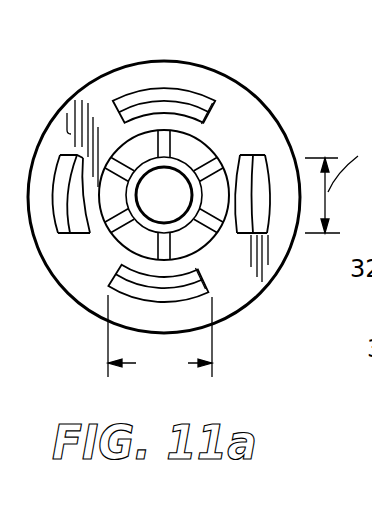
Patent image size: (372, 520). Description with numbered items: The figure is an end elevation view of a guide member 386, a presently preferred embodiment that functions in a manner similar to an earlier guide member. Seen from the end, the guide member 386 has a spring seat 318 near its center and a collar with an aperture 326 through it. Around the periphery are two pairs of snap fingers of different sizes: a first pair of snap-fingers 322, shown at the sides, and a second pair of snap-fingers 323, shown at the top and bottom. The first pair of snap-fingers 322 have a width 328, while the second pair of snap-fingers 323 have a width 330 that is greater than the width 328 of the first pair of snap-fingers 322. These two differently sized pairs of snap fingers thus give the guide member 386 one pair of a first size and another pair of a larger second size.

The guide member 386 is at (266, 88).
The aperture 326 is at (192, 143).
The spring seat 318 is at (203, 255).
The second pair of snap-fingers 323 is at (152, 90).
The first pair of snap-fingers 322 is at (82, 235).
The width 328 is at (338, 179).
The width 330 is at (160, 336).